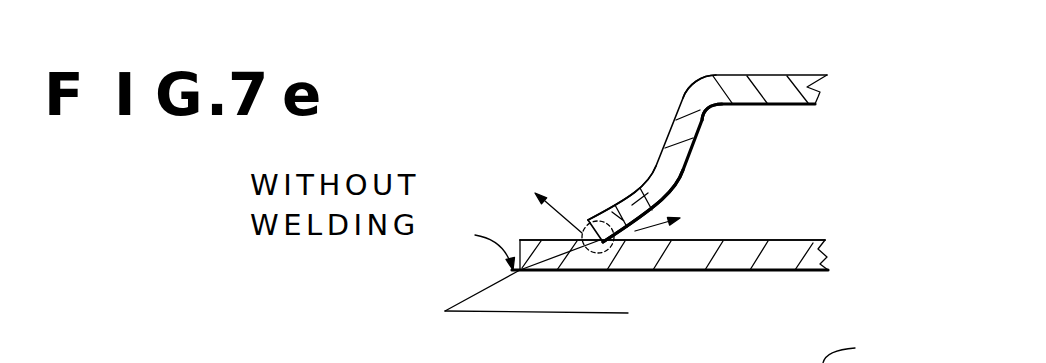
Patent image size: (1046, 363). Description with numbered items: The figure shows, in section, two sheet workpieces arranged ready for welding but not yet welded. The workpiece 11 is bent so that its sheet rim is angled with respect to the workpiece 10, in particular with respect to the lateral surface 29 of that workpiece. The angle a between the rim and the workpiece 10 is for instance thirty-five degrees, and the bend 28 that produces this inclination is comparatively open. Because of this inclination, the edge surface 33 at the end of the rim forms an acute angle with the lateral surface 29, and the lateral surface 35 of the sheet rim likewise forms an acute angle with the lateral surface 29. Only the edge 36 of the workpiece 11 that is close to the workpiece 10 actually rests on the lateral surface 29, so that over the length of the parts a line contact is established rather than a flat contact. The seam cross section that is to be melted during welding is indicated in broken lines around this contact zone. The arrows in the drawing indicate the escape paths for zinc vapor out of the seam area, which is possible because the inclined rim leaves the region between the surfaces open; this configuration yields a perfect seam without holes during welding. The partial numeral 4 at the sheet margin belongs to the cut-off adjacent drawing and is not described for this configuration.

The workpiece 11 is at (822, 86).
The bend 28 is at (687, 122).
The edge surface 33 is at (587, 238).
The lateral surface of the sheet rim 35 is at (672, 198).
The workpiece 10 is at (817, 265).
The lateral surface 29 is at (747, 250).
The edge 36 is at (603, 270).
The angle a is at (510, 352).
The reference of adjacent figure 4 is at (848, 353).